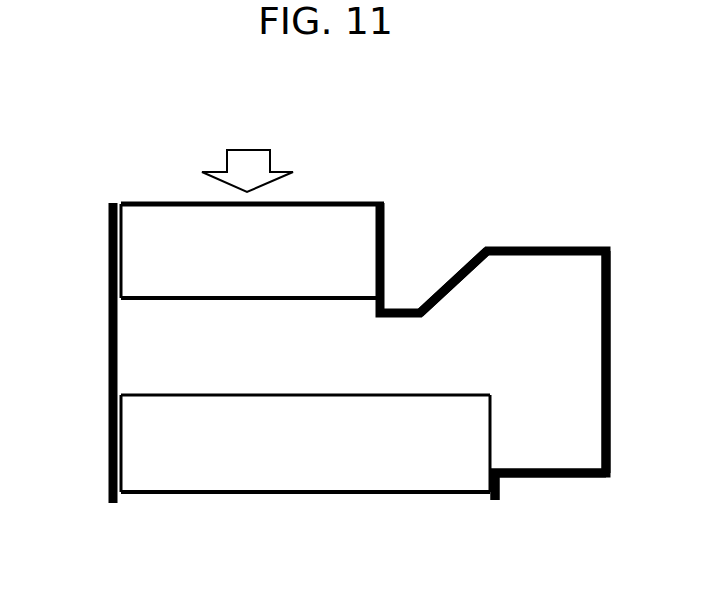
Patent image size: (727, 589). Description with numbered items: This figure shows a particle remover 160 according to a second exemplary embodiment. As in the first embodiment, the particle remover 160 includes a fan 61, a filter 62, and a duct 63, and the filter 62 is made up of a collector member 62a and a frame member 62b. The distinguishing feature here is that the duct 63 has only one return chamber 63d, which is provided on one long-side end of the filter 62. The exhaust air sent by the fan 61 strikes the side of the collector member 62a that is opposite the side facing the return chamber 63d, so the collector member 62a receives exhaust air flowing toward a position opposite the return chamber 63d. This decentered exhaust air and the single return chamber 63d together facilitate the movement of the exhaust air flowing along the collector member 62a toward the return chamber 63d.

The particle remover 160 is at (128, 173).
The fan 61 is at (318, 215).
The filter 62 is at (284, 504).
The collector member 62a is at (147, 492).
The frame member 62b is at (490, 455).
The duct 63 is at (454, 265).
The return chamber 63d is at (604, 277).